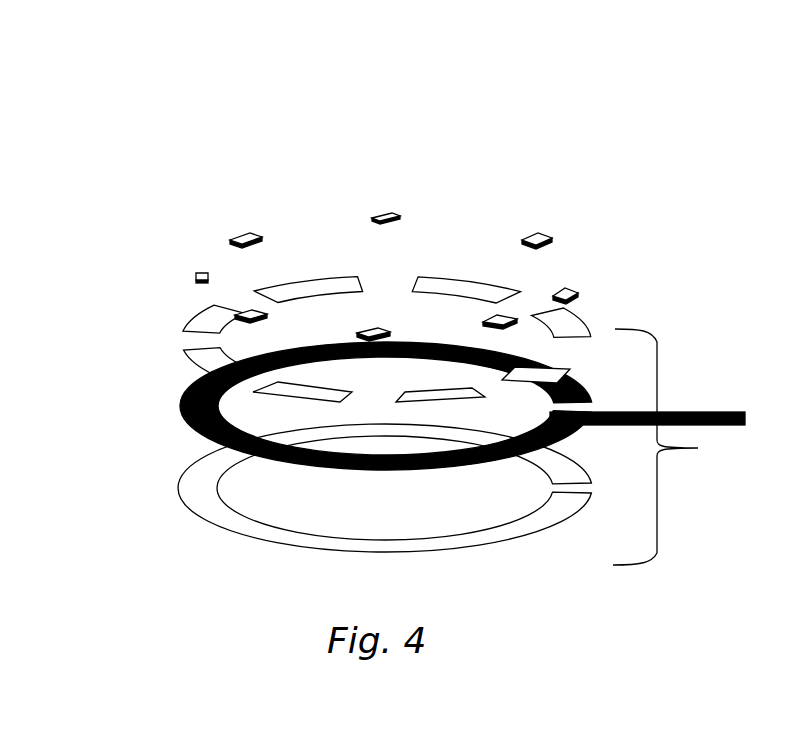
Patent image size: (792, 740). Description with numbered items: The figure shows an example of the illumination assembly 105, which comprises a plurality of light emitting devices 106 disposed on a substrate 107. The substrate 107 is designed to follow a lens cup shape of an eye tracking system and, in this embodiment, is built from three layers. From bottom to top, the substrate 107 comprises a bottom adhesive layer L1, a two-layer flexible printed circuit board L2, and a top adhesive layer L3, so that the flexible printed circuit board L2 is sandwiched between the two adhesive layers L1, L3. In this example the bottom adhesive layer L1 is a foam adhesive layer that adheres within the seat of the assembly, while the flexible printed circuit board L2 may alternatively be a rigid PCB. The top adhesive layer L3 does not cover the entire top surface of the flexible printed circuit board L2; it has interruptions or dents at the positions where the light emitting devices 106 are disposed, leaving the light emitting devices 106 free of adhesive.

The illumination assembly 105 is at (471, 159).
The light emitting devices 106 is at (237, 238).
The substrate 107 is at (665, 374).
The bottom adhesive layer L1 is at (192, 493).
The flexible printed circuit board layer L2 is at (193, 427).
The top adhesive layer L3 is at (186, 332).